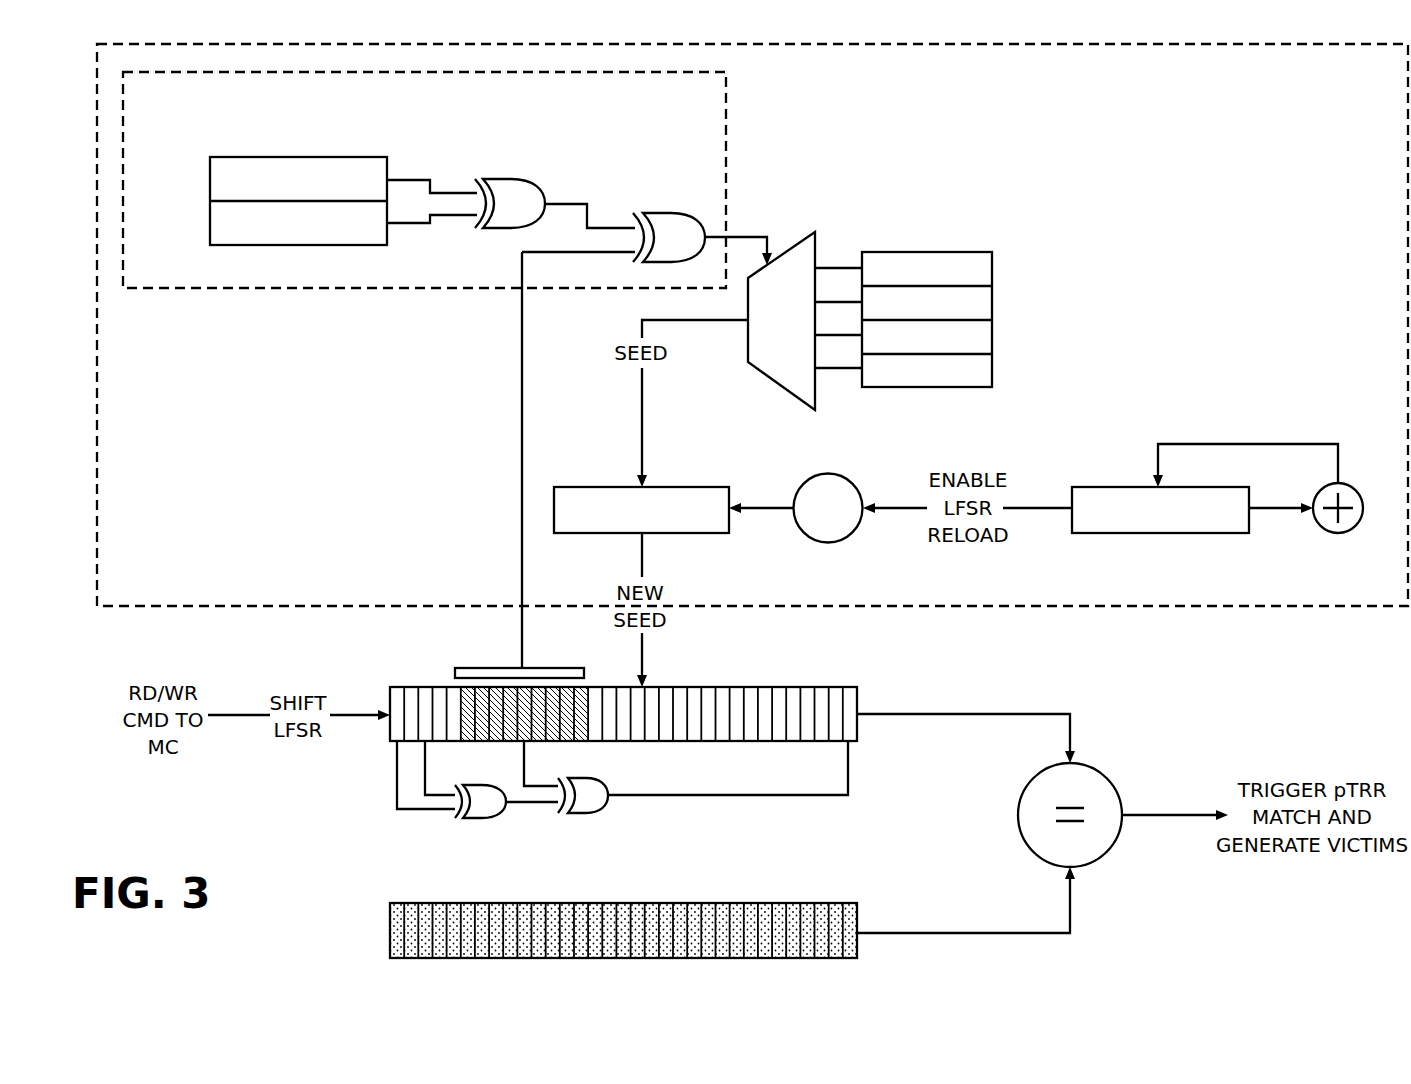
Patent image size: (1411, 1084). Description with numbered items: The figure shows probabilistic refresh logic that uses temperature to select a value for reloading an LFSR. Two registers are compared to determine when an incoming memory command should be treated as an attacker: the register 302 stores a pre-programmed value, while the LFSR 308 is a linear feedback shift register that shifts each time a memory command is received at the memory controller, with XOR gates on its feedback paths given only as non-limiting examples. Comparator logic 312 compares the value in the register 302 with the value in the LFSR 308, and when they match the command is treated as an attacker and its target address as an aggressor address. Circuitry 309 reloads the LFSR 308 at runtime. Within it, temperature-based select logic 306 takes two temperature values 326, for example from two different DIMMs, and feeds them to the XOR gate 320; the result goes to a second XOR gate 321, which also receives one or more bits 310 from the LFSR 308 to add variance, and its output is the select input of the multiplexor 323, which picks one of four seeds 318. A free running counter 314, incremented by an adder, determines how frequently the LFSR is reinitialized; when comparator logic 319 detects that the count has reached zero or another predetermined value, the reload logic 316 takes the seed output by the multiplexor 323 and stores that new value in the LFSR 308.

The register 302 is at (390, 927).
The temperature-based select logic 306 is at (424, 180).
The LFSR 308 is at (390, 737).
The circuitry to re-load the LFSR 309 is at (752, 325).
The bits from the LFSR 310 is at (470, 668).
The comparator logic 312 is at (1112, 852).
The counter 314 is at (1133, 533).
The reload logic 316 is at (708, 485).
The seeds 318 is at (965, 248).
The comparator logic 319 is at (845, 473).
The XOR gate 320 is at (509, 188).
The second XOR gate 321 is at (655, 222).
The multiplexor 323 is at (800, 245).
The temperature values 326 is at (258, 156).